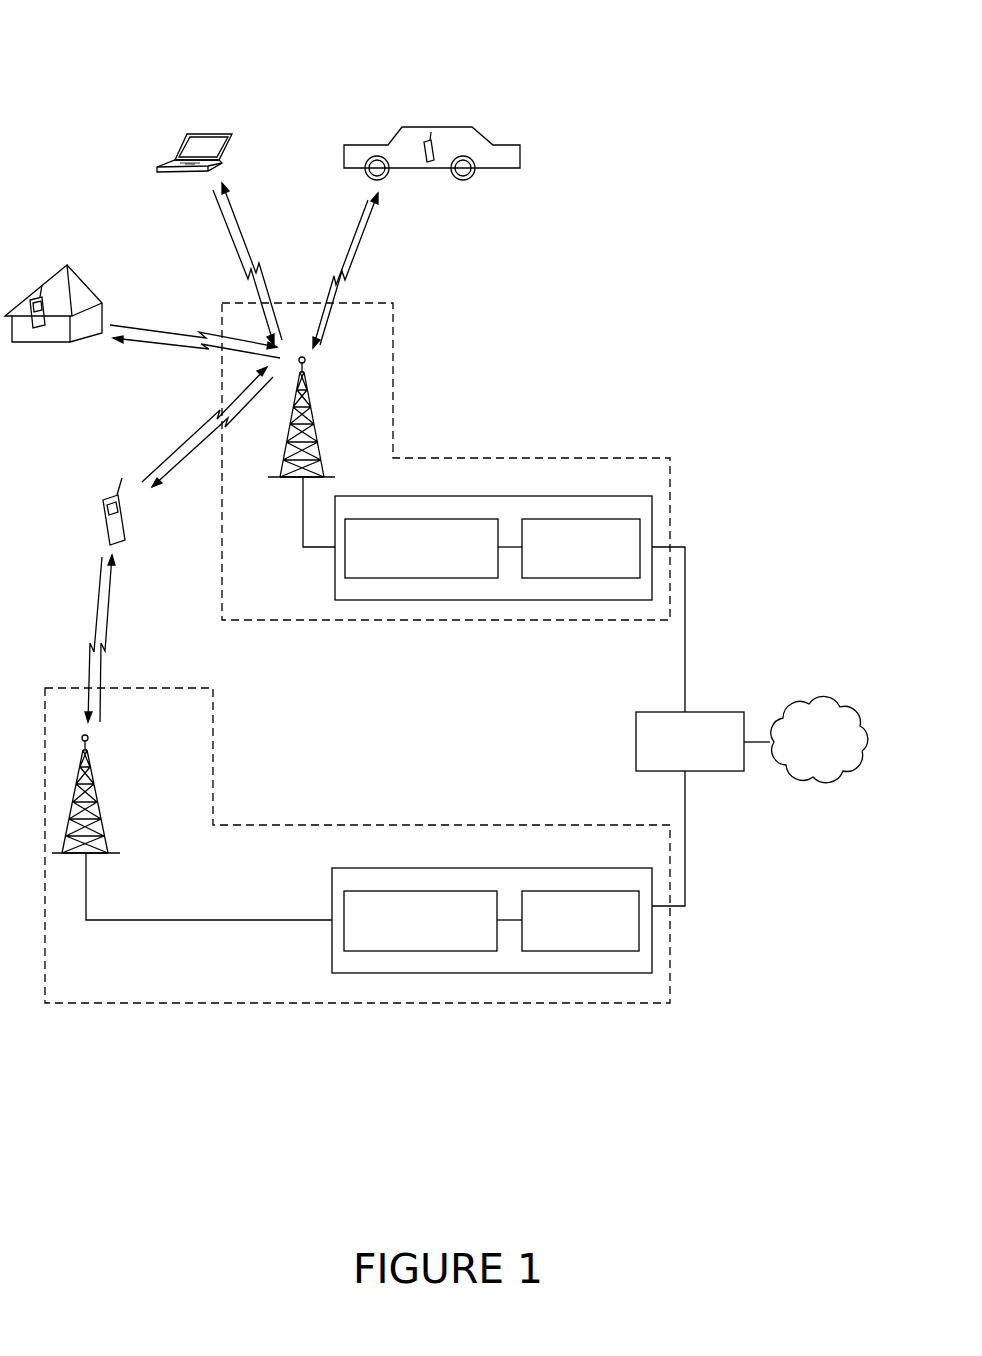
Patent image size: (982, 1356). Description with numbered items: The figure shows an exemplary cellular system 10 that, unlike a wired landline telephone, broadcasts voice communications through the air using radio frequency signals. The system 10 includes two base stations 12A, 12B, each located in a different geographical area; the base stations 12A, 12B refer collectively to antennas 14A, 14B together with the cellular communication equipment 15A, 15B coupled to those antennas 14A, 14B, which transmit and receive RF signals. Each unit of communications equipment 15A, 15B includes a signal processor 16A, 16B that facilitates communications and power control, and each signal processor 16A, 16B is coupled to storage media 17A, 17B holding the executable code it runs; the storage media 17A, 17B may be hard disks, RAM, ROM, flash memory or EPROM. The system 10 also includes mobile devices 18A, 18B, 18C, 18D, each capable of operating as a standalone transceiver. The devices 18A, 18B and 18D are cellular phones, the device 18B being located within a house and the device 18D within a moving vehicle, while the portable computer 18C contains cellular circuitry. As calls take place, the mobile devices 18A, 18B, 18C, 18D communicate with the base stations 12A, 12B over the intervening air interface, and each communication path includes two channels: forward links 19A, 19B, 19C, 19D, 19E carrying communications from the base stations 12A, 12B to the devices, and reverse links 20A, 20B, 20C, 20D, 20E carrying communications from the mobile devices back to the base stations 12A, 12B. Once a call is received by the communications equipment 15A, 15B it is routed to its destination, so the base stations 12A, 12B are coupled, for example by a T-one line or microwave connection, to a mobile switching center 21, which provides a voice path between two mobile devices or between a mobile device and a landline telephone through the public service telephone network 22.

The cellular system 10 is at (115, 65).
The base station 12A is at (417, 628).
The base station 12B is at (318, 1008).
The antenna 14A is at (293, 480).
The antenna 14B is at (98, 855).
The cellular communication equipment 15A is at (515, 496).
The cellular communication equipment 15B is at (508, 868).
The signal processor 16A is at (397, 572).
The signal processor 16B is at (396, 945).
The storage media 17A is at (557, 572).
The storage media 17B is at (556, 945).
The mobile device 18A is at (103, 527).
The mobile device 18B is at (35, 338).
The portable computer 18C is at (200, 133).
The mobile device 18D is at (432, 167).
The forward link 19A is at (201, 448).
The forward link 19B is at (148, 352).
The forward link 19C is at (224, 218).
The forward link 19D is at (346, 260).
The forward link 19E is at (93, 625).
The reverse link 20A is at (185, 452).
The reverse link 20B is at (146, 328).
The reverse link 20C is at (233, 221).
The reverse link 20D is at (367, 242).
The reverse link 20E is at (112, 605).
The mobile switching center 21 is at (636, 742).
The public service telephone network 22 is at (797, 778).